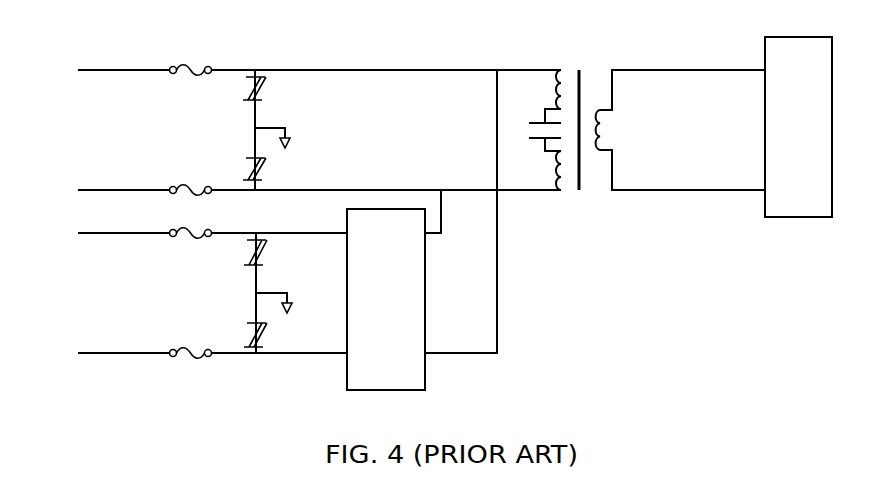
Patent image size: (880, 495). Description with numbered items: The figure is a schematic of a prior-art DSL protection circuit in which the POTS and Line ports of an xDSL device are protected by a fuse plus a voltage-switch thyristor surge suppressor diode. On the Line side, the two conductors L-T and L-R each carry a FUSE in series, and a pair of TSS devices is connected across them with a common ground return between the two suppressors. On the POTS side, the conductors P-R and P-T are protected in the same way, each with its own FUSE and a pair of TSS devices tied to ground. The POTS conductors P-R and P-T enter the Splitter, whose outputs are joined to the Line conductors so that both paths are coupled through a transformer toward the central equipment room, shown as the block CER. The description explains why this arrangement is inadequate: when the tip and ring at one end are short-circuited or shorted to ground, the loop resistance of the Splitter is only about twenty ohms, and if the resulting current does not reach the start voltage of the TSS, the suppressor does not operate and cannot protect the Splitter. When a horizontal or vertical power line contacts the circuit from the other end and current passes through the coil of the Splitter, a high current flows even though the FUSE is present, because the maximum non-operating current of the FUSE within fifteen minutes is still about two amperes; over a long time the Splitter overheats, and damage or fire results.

The line tip conductor L-T is at (301, 70).
The line ring conductor L-R is at (301, 190).
The POTS ring conductor P-R is at (241, 215).
The POTS tip conductor P-T is at (269, 215).
The Line port Line is at (183, 130).
The POTS port POTS is at (185, 293).
The fuse FUSE is at (192, 204).
The thyristor surge suppressor TSS is at (270, 212).
The splitter Splitter is at (386, 299).
The isolation transformer is at (647, 130).
The central equipment room CER is at (798, 127).